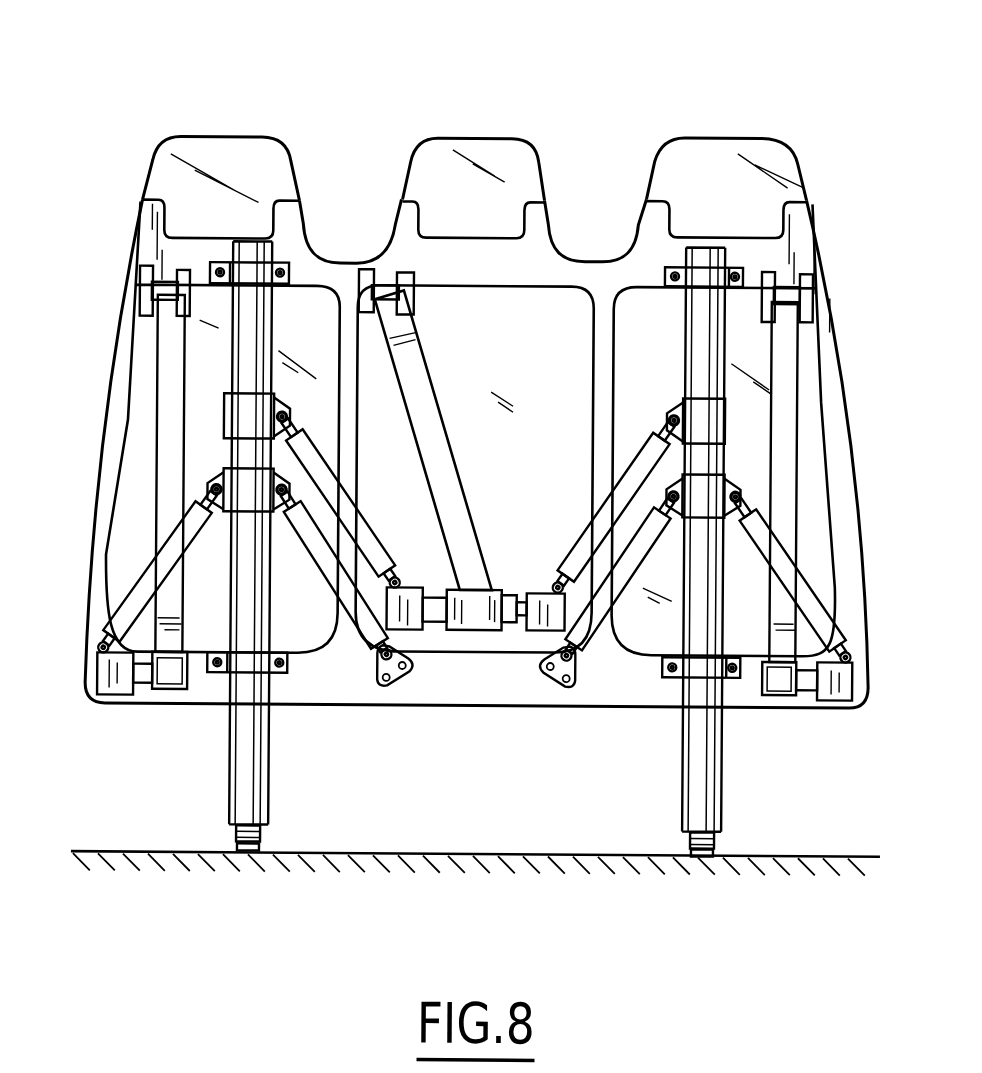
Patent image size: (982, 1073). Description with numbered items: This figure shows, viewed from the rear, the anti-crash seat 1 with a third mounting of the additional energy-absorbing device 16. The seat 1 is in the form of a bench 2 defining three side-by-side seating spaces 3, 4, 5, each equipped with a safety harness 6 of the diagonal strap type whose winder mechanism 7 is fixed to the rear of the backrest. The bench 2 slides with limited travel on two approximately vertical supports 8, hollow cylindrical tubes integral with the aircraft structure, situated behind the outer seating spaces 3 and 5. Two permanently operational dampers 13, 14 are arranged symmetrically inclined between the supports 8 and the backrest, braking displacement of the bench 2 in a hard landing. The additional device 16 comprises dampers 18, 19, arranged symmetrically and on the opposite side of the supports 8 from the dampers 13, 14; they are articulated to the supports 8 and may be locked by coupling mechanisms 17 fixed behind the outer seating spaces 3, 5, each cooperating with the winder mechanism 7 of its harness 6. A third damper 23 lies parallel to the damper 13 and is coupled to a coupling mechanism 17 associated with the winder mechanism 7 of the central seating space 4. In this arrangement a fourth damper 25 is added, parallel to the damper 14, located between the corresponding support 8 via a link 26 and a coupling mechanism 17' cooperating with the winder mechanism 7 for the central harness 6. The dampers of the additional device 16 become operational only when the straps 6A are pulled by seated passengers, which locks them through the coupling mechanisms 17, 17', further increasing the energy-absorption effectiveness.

The anti-crash seat 1 is at (233, 55).
The bench 2 is at (478, 137).
The seating space 3 is at (263, 147).
The seating space 4 is at (535, 152).
The seating space 5 is at (783, 150).
The safety harness 6 is at (458, 465).
The strap 6A is at (425, 407).
The winder mechanism 7 is at (476, 614).
The support 8 is at (252, 770).
The damper 13 is at (350, 618).
The damper 14 is at (600, 614).
The additional energy-absorbing device 16 is at (144, 550).
The coupling mechanism 17 is at (473, 650).
The coupling mechanism 17' is at (537, 568).
The damper 18 is at (180, 550).
The damper 19 is at (807, 590).
The third damper 23 is at (360, 528).
The fourth damper 25 is at (590, 522).
The link 26 is at (674, 411).